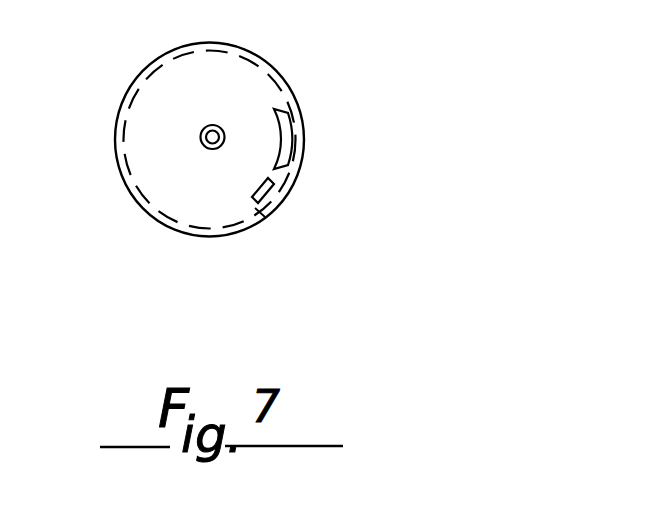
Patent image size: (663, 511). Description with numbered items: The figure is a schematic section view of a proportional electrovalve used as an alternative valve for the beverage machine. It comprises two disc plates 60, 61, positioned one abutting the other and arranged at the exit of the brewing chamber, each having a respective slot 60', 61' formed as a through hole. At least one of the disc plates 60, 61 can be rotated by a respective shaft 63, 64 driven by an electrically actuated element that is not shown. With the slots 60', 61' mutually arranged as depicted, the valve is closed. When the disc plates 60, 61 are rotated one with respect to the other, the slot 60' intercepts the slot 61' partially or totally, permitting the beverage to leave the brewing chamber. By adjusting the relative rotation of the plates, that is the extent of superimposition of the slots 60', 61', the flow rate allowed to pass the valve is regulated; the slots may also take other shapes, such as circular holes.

The disc plate 60 is at (323, 126).
The slot 60' is at (330, 139).
The disc plate 61 is at (285, 256).
The slot 61' is at (223, 253).
The shaft 63 is at (212, 154).
The shaft 64 is at (201, 134).